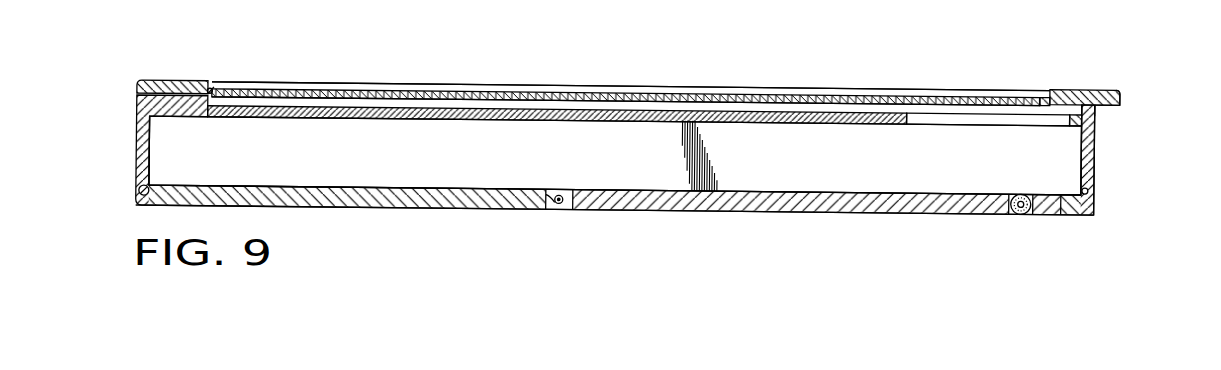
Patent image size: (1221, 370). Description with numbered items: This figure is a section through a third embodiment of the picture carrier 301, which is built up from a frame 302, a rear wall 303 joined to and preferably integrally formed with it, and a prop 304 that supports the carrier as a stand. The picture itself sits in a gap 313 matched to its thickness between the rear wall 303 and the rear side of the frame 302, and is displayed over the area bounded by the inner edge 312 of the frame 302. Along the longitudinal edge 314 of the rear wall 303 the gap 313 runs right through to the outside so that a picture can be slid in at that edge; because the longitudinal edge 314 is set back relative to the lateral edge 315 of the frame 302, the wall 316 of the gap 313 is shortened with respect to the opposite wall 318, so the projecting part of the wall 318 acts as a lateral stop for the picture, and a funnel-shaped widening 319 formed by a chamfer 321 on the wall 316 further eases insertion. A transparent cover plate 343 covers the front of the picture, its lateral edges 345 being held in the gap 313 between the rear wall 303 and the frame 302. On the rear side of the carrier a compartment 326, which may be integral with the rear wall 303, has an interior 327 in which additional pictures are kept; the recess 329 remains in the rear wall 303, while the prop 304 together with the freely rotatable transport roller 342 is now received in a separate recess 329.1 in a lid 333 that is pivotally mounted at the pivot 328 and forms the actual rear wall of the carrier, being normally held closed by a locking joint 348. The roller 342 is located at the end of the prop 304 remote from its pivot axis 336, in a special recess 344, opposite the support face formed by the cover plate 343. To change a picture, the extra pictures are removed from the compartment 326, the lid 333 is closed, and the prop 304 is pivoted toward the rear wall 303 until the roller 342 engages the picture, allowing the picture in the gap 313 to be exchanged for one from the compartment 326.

The picture carrier 301 is at (471, 219).
The frame 302 is at (174, 72).
The rear wall 303 is at (397, 118).
The prop 304 is at (695, 219).
The inner edge 312 is at (225, 80).
The gap 313 is at (933, 110).
The longitudinal edge 314 is at (1097, 133).
The lateral edge 315 is at (1119, 99).
The wall 316 is at (1073, 115).
The wall 318 is at (1113, 108).
The funnel-shaped widening 319 is at (1097, 108).
The chamfer 321 is at (1094, 112).
The compartment 326 is at (140, 162).
The interior 327 is at (566, 164).
The pivot 328 is at (140, 198).
The recess 329 is at (948, 118).
The recess 329.1 is at (550, 208).
The lid 333 is at (376, 208).
The pivot axis 336 is at (567, 208).
The transport roller 342 is at (1022, 214).
The transparent cover plate 343 is at (988, 100).
The recess 344 is at (1038, 213).
The lateral edges 345 is at (212, 87).
The locking joint 348 is at (1095, 190).